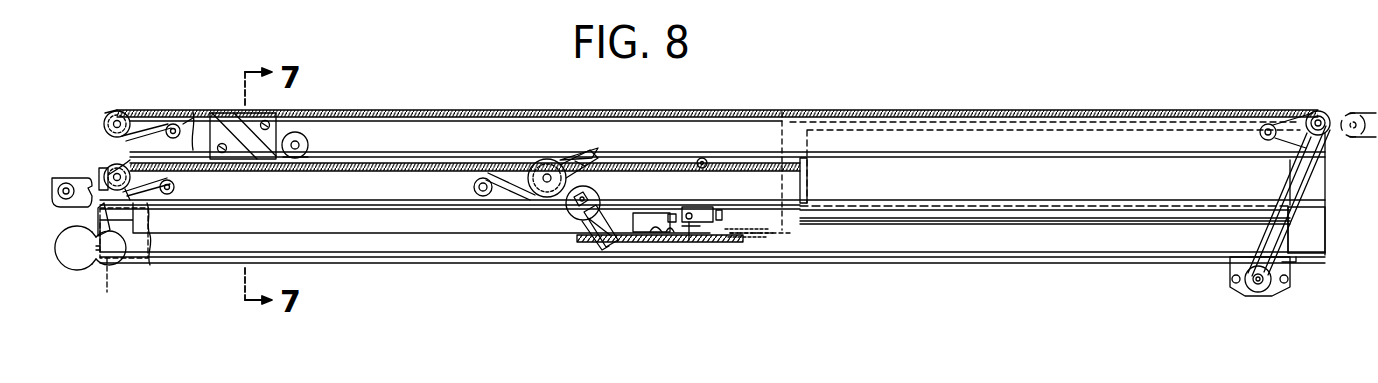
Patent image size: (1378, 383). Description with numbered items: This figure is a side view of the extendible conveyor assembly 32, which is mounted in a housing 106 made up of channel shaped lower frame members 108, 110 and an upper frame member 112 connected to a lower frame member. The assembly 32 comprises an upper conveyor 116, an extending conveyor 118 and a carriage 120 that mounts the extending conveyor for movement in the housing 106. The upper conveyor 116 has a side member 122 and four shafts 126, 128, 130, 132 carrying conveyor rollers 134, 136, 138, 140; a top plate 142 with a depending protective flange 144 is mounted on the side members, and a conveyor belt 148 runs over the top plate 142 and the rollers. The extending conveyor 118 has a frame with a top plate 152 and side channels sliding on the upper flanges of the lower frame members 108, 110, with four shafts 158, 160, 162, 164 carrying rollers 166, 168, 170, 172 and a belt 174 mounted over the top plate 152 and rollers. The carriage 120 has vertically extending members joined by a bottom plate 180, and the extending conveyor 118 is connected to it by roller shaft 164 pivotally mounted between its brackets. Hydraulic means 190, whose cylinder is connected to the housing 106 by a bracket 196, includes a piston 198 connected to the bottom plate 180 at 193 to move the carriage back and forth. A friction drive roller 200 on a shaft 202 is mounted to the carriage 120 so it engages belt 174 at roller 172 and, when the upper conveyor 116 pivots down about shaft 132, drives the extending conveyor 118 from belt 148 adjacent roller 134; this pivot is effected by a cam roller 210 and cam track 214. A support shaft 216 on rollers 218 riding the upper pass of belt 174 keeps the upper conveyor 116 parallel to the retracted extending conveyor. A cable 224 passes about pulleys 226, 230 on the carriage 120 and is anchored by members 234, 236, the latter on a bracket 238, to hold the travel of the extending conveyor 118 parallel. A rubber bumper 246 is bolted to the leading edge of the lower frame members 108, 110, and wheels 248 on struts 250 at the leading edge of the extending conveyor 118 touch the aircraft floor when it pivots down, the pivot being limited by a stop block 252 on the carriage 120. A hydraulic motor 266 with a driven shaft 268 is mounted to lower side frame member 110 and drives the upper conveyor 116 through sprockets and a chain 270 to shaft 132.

The extendible conveyor assembly 32 is at (1060, 101).
The housing 106 is at (1319, 183).
The lower frame member 108 is at (1025, 248).
The lower frame member 110 is at (148, 244).
The upper frame member 112 is at (1082, 170).
The upper conveyor 116 is at (737, 96).
The extending conveyor 118 is at (438, 206).
The carriage 120 is at (801, 177).
The side member 122 is at (792, 132).
The shaft 126 is at (110, 112).
The shaft 128 is at (175, 124).
The shaft 130 is at (1266, 124).
The shaft 132 is at (1315, 112).
The conveyor roller 134 is at (121, 119).
The conveyor roller 136 is at (166, 142).
The conveyor roller 138 is at (1258, 134).
The conveyor roller 140 is at (1342, 110).
The top plate 142 is at (535, 116).
The protective flange 144 is at (1133, 258).
The conveyor belt 148 is at (458, 110).
The top plate 152 is at (486, 162).
The shaft 158 is at (125, 165).
The shaft 160 is at (176, 188).
The shaft 162 is at (480, 197).
The roller shaft 164 is at (548, 172).
The conveyor roller 166 is at (108, 168).
The conveyor roller 168 is at (168, 195).
The conveyor roller 170 is at (490, 198).
The conveyor roller 172 is at (590, 158).
The belt 174 is at (364, 180).
The bottom plate 180 is at (684, 240).
The hydraulic means 190 is at (915, 234).
The piston connection 193 is at (672, 250).
The bracket 196 is at (1325, 221).
The piston 198 is at (720, 240).
The friction drive roller 200 is at (590, 192).
The shaft 202 is at (572, 213).
The cam roller 210 is at (707, 168).
The cam track 214 is at (230, 120).
The support shaft 216 is at (302, 143).
The roller 218 is at (297, 159).
The cable 224 is at (258, 224).
The pulley 226 is at (640, 244).
The pulley 230 is at (672, 212).
The anchoring member 234 is at (107, 288).
The anchoring member 236 is at (752, 240).
The bracket 238 is at (790, 234).
The rubber bumper 246 is at (72, 278).
The wheel 248 is at (68, 177).
The strut 250 is at (123, 230).
The stop block 252 is at (572, 150).
The hydraulic motor 266 is at (1266, 290).
The driven shaft 268 is at (1250, 288).
The chain 270 is at (1290, 270).